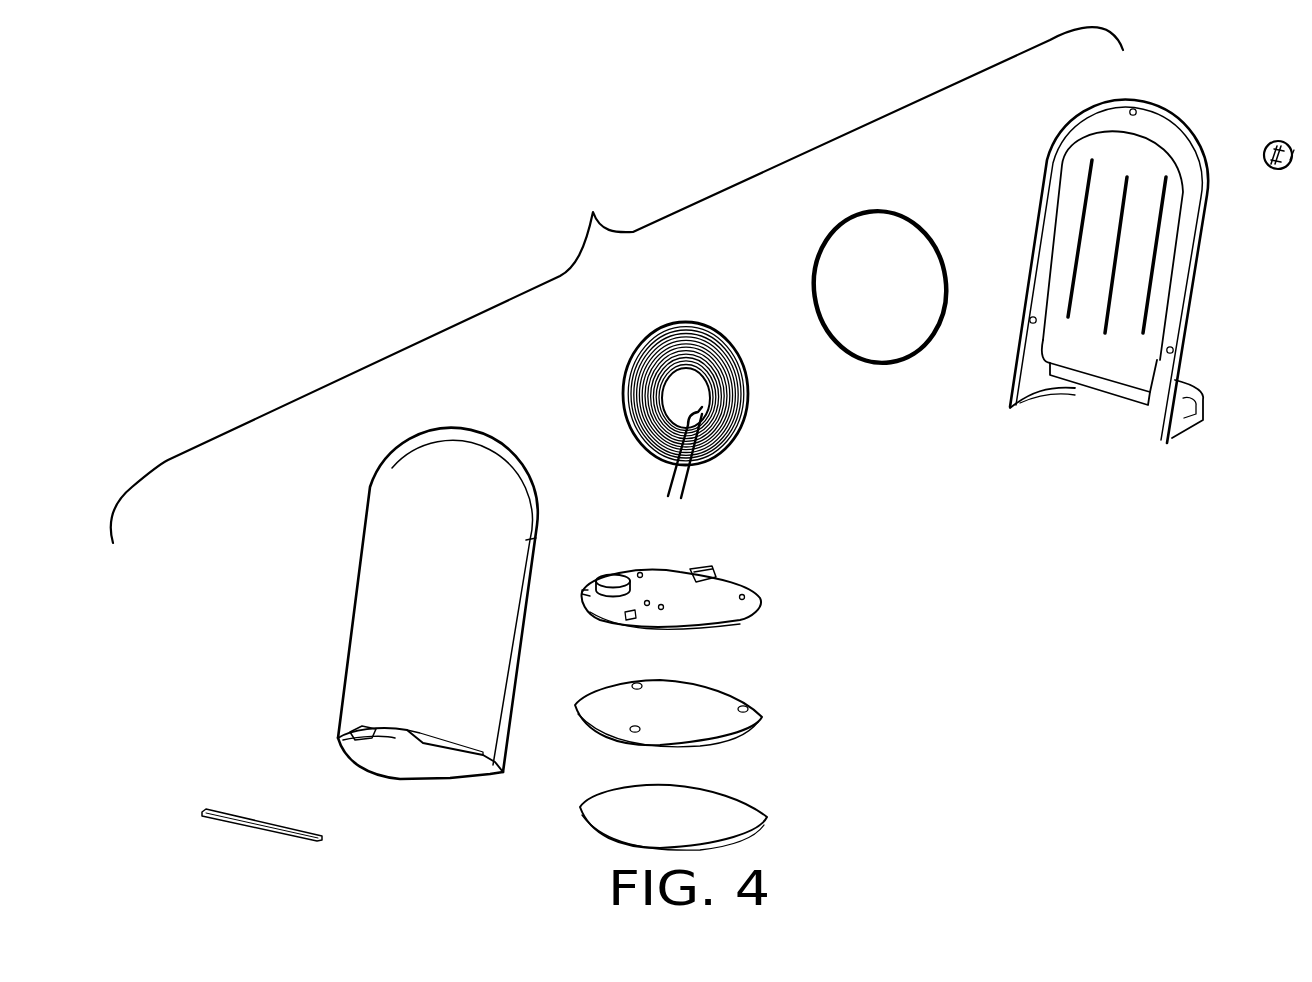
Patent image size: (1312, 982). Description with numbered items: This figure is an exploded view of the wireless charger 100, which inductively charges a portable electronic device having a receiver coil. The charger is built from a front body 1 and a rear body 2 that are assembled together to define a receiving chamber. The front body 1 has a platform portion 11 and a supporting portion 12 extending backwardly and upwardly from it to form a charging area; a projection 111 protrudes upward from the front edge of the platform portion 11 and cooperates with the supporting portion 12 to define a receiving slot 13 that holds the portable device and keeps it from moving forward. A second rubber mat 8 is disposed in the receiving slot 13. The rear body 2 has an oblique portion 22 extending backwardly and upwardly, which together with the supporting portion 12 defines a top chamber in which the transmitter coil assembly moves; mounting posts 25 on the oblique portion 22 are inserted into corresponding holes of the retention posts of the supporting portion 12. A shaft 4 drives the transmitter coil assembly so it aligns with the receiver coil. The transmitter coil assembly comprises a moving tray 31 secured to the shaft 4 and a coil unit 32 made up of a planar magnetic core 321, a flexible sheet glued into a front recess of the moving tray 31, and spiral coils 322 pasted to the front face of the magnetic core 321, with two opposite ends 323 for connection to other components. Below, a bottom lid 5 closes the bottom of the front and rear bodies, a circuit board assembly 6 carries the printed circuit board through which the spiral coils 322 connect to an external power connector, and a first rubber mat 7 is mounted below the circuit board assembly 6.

The wireless charger 100 is at (617, 285).
The front body 1 is at (390, 633).
The platform portion 11 is at (405, 762).
The projection 111 is at (393, 738).
The supporting portion 12 is at (383, 569).
The receiving slot 13 is at (362, 728).
The second rubber mat 8 is at (262, 822).
The rear body 2 is at (1118, 265).
The oblique portion 22 is at (1072, 197).
The mounting posts 25 is at (1187, 362).
The shaft 4 is at (1260, 128).
The moving tray 31 is at (810, 236).
The coil assembly 32 is at (685, 398).
The planar magnetic core 321 is at (748, 404).
The spiral coils 322 is at (658, 340).
The opposite ends 323 is at (684, 490).
The circuit board assembly 6 is at (736, 560).
The bottom lid 5 is at (732, 677).
The first rubber mat 7 is at (726, 782).